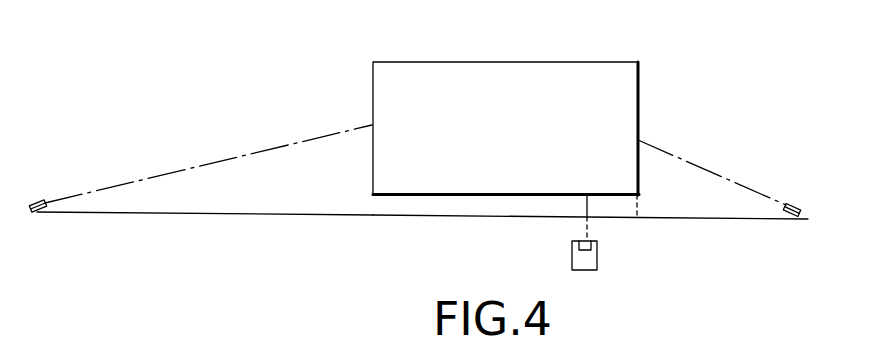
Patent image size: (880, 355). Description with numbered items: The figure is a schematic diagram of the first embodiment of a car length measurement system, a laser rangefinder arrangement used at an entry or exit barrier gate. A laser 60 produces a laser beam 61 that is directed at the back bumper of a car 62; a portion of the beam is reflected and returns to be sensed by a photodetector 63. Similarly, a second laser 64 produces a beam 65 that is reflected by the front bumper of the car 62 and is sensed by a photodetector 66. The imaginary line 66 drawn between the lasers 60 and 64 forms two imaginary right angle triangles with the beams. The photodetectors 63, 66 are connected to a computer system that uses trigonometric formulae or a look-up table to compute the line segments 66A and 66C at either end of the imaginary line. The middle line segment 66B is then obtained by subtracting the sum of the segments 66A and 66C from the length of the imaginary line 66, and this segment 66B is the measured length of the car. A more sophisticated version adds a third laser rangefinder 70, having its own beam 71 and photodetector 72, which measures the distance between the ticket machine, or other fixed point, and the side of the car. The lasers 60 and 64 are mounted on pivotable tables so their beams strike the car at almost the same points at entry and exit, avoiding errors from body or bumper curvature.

The laser 60 is at (41, 215).
The laser beam 61 is at (205, 164).
The car 62 is at (557, 62).
The photodetector 63 is at (36, 203).
The second laser 64 is at (797, 219).
The beam 65 is at (685, 160).
The photodetector 66 is at (793, 204).
The line segment 66A is at (232, 214).
The line segment 66B is at (443, 216).
The line segment 66C is at (693, 219).
The third laser rangefinder 70 is at (596, 240).
The beam 71 is at (589, 207).
The photodetector 72 is at (572, 238).